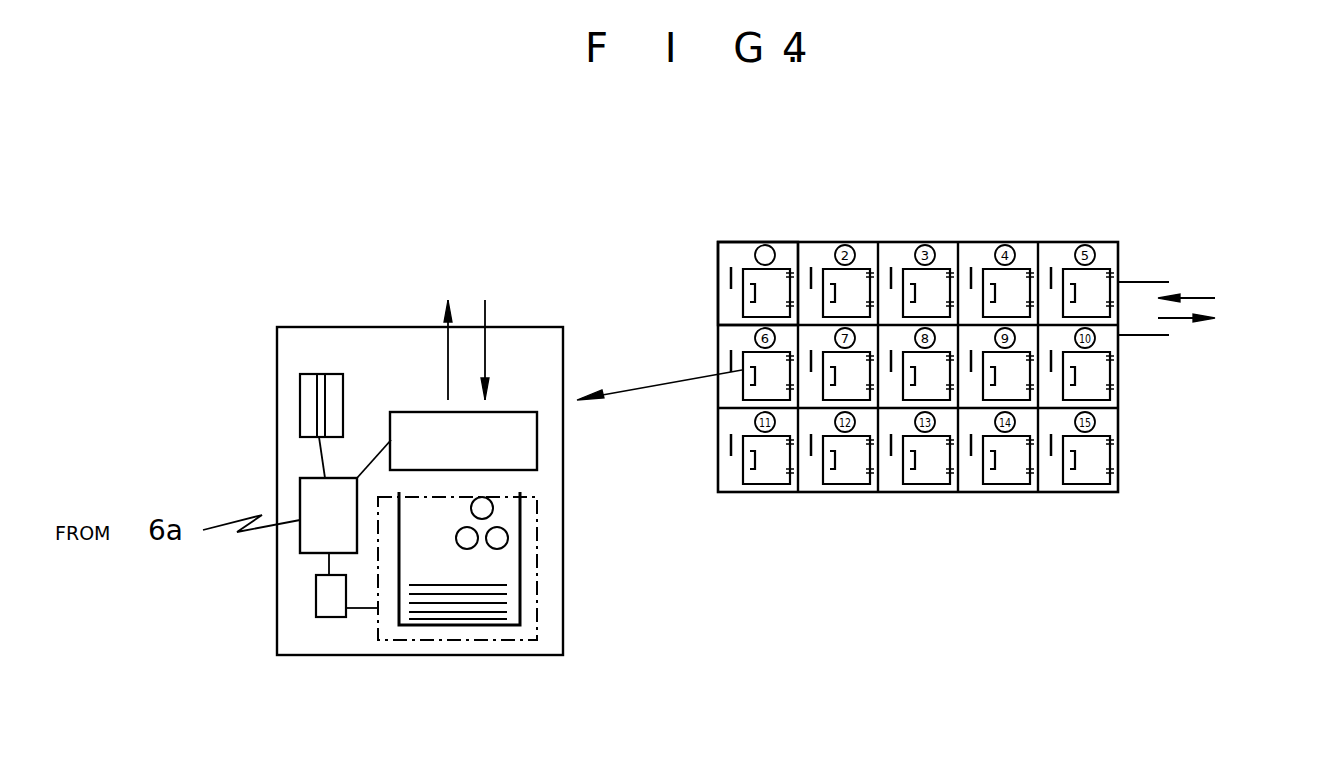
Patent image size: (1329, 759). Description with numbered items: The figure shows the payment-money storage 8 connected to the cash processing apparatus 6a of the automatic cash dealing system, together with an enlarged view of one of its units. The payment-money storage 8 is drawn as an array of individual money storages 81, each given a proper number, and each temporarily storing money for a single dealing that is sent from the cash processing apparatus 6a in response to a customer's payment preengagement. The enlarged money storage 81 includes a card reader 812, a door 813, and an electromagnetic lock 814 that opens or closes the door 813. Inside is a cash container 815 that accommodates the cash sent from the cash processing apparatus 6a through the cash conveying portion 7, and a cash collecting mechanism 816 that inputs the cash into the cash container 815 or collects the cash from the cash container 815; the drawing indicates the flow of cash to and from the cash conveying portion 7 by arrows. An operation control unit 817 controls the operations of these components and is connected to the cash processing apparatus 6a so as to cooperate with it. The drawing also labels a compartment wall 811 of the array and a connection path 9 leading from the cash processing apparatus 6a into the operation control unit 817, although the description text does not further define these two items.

The payment-money storage 8 is at (1096, 242).
The money storage 81 is at (317, 327).
The storage compartment 811 is at (728, 250).
The card reader 812 is at (300, 392).
The door 813 is at (465, 640).
The electromagnetic lock 814 is at (316, 595).
The cash container 815 is at (510, 627).
The cash collecting mechanism 816 is at (537, 452).
The operation control unit 817 is at (300, 480).
The cash conveying portion 7 is at (1150, 282).
The transport path 9 is at (257, 531).
The cash processing apparatus 6a is at (1235, 306).